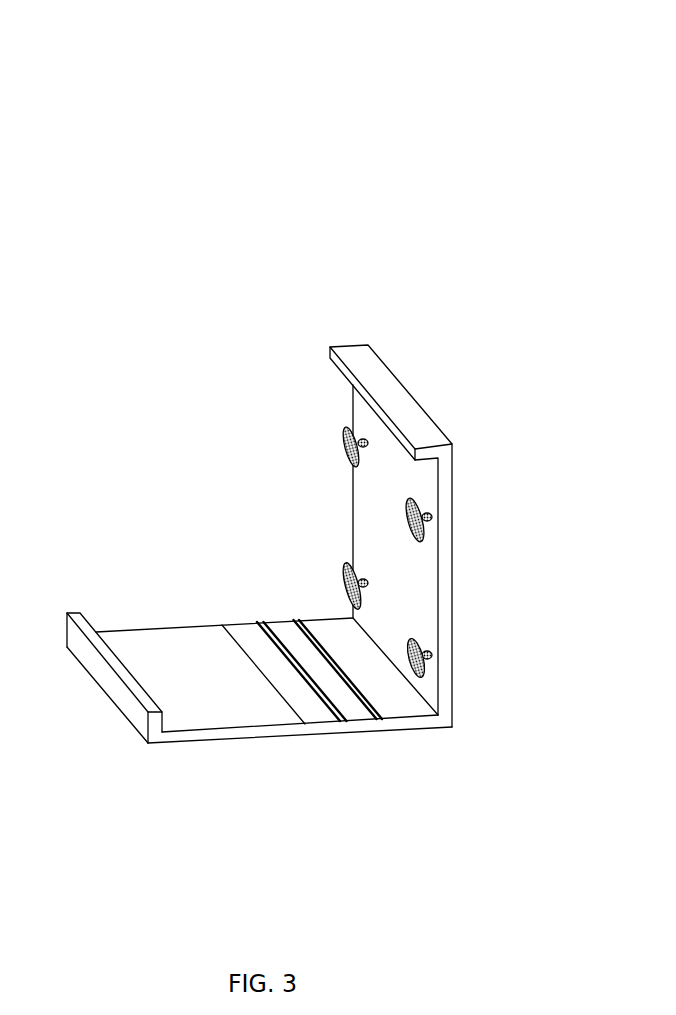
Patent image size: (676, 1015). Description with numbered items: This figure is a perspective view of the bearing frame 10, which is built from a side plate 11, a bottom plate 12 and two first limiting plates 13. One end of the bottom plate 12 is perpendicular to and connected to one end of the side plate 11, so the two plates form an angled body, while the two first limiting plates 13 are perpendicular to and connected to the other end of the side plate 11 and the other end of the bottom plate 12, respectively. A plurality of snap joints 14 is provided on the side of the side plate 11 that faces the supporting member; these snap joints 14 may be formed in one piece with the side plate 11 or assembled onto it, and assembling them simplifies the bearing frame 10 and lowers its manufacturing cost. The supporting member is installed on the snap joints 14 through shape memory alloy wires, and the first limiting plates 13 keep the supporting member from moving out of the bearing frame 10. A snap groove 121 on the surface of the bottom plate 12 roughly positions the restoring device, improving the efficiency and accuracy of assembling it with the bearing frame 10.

The bearing frame 10 is at (258, 72).
The side plate 11 is at (430, 615).
The bottom plate 12 is at (237, 715).
The snap groove 121 is at (350, 708).
The first limiting plates 13 is at (100, 673).
The snap joints 14 is at (430, 515).